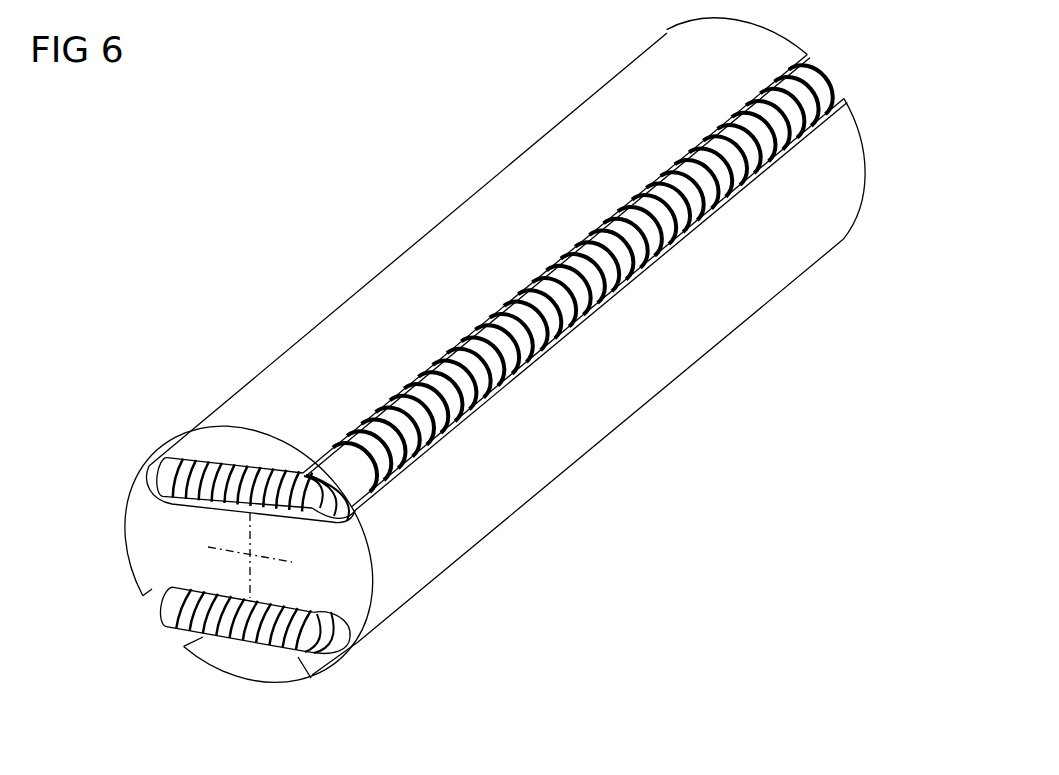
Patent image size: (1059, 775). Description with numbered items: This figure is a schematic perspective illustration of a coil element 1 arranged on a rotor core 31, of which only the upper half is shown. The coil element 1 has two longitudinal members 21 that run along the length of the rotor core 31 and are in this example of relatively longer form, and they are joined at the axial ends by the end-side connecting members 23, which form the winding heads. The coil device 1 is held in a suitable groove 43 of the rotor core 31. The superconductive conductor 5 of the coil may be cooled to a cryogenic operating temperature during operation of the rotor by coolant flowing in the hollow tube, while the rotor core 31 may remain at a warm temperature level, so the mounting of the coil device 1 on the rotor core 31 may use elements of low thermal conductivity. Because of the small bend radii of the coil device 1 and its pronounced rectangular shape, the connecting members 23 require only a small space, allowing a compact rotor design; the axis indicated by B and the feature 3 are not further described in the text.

The coil element 1 is at (226, 253).
The rotor core 31 is at (372, 298).
The axially end-side connecting member 23 is at (233, 462).
The superconductive conductor 5 is at (577, 318).
The slot 3 is at (546, 345).
The longitudinal member 21 is at (496, 392).
The groove 43 is at (153, 606).
The axis B is at (262, 553).